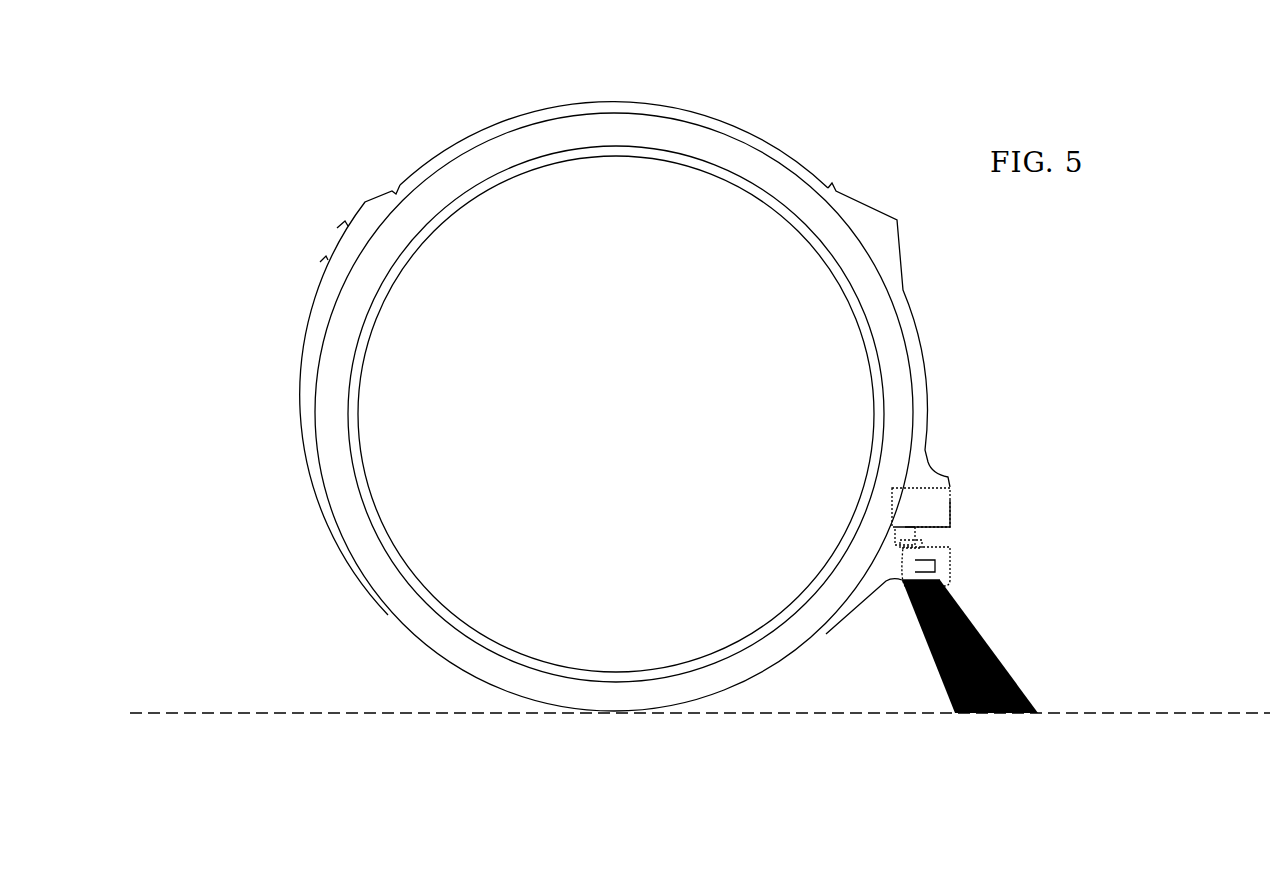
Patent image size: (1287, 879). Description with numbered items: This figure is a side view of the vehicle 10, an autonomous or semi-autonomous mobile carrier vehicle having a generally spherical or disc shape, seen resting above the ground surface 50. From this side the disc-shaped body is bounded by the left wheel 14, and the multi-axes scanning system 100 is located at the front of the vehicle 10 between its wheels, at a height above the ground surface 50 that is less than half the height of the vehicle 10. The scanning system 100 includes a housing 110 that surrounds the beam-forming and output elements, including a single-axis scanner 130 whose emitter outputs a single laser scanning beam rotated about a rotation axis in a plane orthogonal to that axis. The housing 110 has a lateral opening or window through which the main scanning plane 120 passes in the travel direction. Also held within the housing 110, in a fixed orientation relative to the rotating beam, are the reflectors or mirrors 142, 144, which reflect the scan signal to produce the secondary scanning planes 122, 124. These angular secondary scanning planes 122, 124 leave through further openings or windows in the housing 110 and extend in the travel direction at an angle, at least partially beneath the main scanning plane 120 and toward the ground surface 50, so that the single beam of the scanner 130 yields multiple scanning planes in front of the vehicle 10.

The vehicle 10 is at (960, 113).
The left wheel 14 is at (837, 248).
The ground surface 50 is at (1080, 713).
The multi-axes scanning system 100 is at (1058, 532).
The housing 110 is at (950, 487).
The main scanning plane 120 is at (920, 555).
The secondary scanning plane 122 is at (935, 600).
The secondary scanning plane 124 is at (960, 600).
The single-axis scanner 130 is at (937, 508).
The reflector 142 is at (905, 536).
The reflector 144 is at (960, 538).